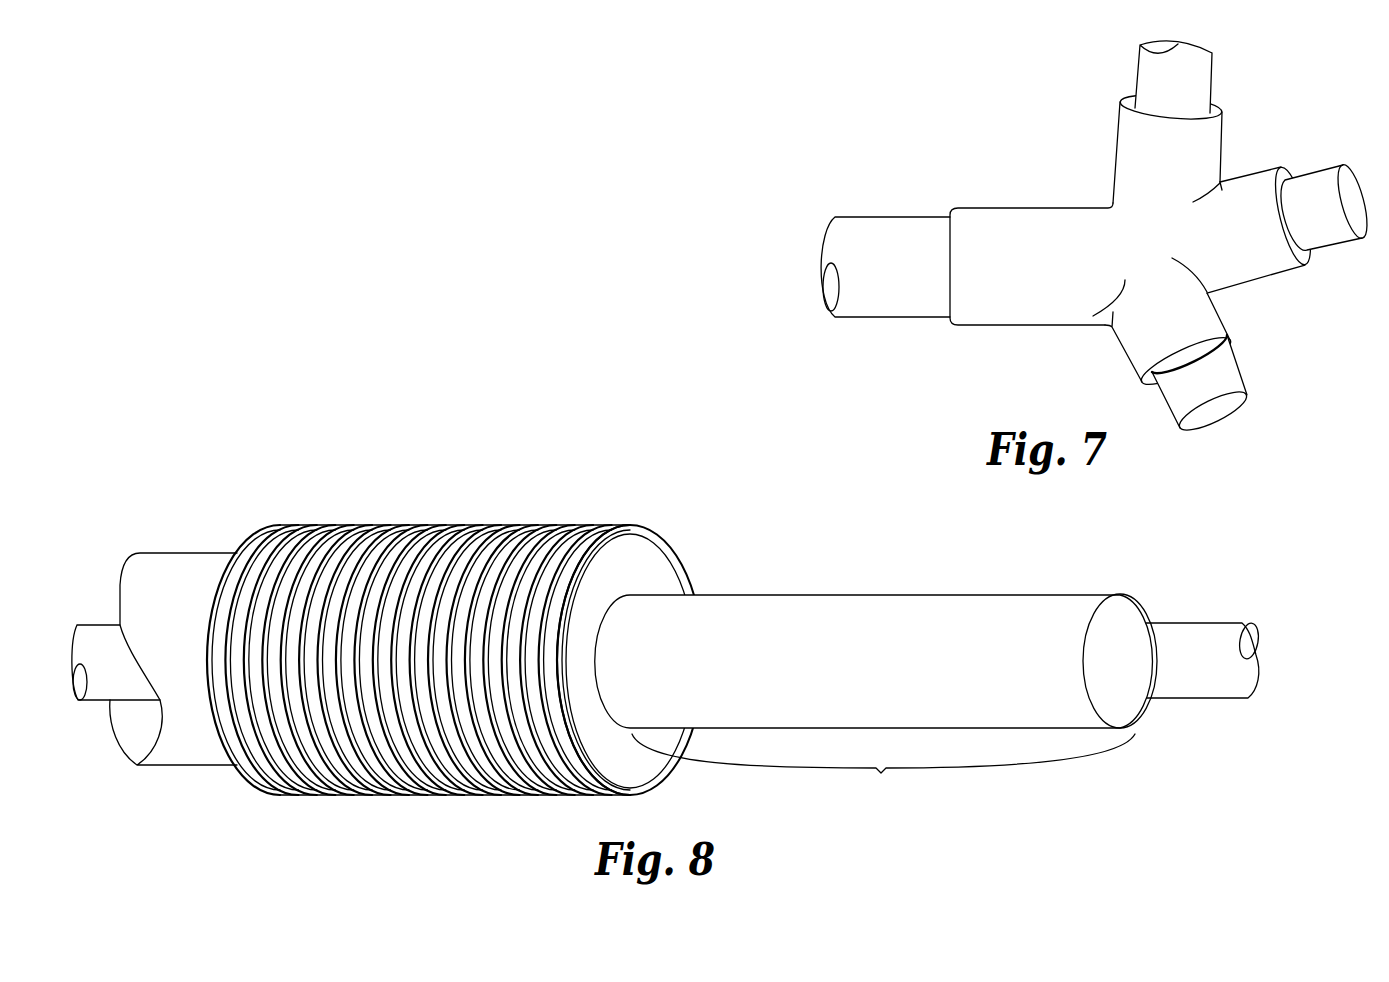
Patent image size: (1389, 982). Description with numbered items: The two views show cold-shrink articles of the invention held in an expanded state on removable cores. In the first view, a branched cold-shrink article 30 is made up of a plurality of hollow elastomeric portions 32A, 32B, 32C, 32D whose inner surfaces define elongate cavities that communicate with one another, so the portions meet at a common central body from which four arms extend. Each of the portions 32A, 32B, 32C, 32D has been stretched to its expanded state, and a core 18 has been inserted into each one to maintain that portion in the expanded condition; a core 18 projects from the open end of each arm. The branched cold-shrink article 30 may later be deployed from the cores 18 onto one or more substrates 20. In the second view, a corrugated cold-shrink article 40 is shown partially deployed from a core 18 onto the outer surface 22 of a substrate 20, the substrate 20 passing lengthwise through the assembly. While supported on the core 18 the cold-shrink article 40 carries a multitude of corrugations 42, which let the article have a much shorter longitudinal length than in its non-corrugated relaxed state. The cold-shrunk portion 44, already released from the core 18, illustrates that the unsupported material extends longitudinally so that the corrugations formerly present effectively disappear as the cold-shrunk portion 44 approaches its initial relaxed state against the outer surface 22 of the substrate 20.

In FIG. 7, the core 18 is at (885, 227).
In FIG. 8, the core 18 is at (188, 745).
In FIG. 8, the substrate 20 is at (691, 660).
In FIG. 8, the outer surface of the substrate 22 is at (103, 683).
In FIG. 7, the branched cold-shrink article 30 is at (1140, 235).
In FIG. 7, the hollow elastomeric portion 32A is at (1012, 312).
In FIG. 7, the hollow elastomeric portion 32B is at (1208, 140).
In FIG. 7, the hollow elastomeric portion 32C is at (1262, 263).
In FIG. 7, the hollow elastomeric portion 32D is at (1136, 351).
In FIG. 8, the cold-shrink article 40 is at (682, 635).
In FIG. 8, the corrugations 42 is at (392, 503).
In FIG. 8, the cold-shrunk portion 44 is at (876, 709).